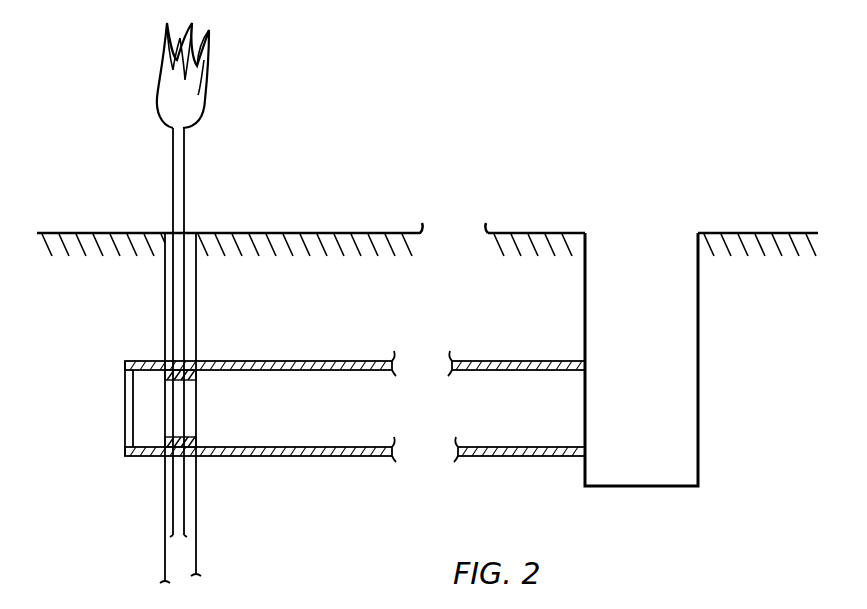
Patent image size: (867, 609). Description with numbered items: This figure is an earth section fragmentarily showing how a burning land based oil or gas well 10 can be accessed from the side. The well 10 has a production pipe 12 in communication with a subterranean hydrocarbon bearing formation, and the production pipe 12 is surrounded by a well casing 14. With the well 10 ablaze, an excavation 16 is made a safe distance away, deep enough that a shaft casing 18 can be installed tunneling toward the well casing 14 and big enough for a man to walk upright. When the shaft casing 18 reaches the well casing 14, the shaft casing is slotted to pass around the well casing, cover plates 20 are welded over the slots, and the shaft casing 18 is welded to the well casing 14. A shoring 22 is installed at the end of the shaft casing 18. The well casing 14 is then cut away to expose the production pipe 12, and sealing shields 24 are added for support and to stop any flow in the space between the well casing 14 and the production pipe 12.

The oil or gas well 10 is at (200, 85).
The production pipe 12 is at (186, 192).
The well casing 14 is at (198, 314).
The excavation 16 is at (700, 330).
The shaft casing 18 is at (477, 358).
The cover plates 20 is at (140, 361).
The shoring 22 is at (125, 408).
The sealing shields 24 is at (203, 362).